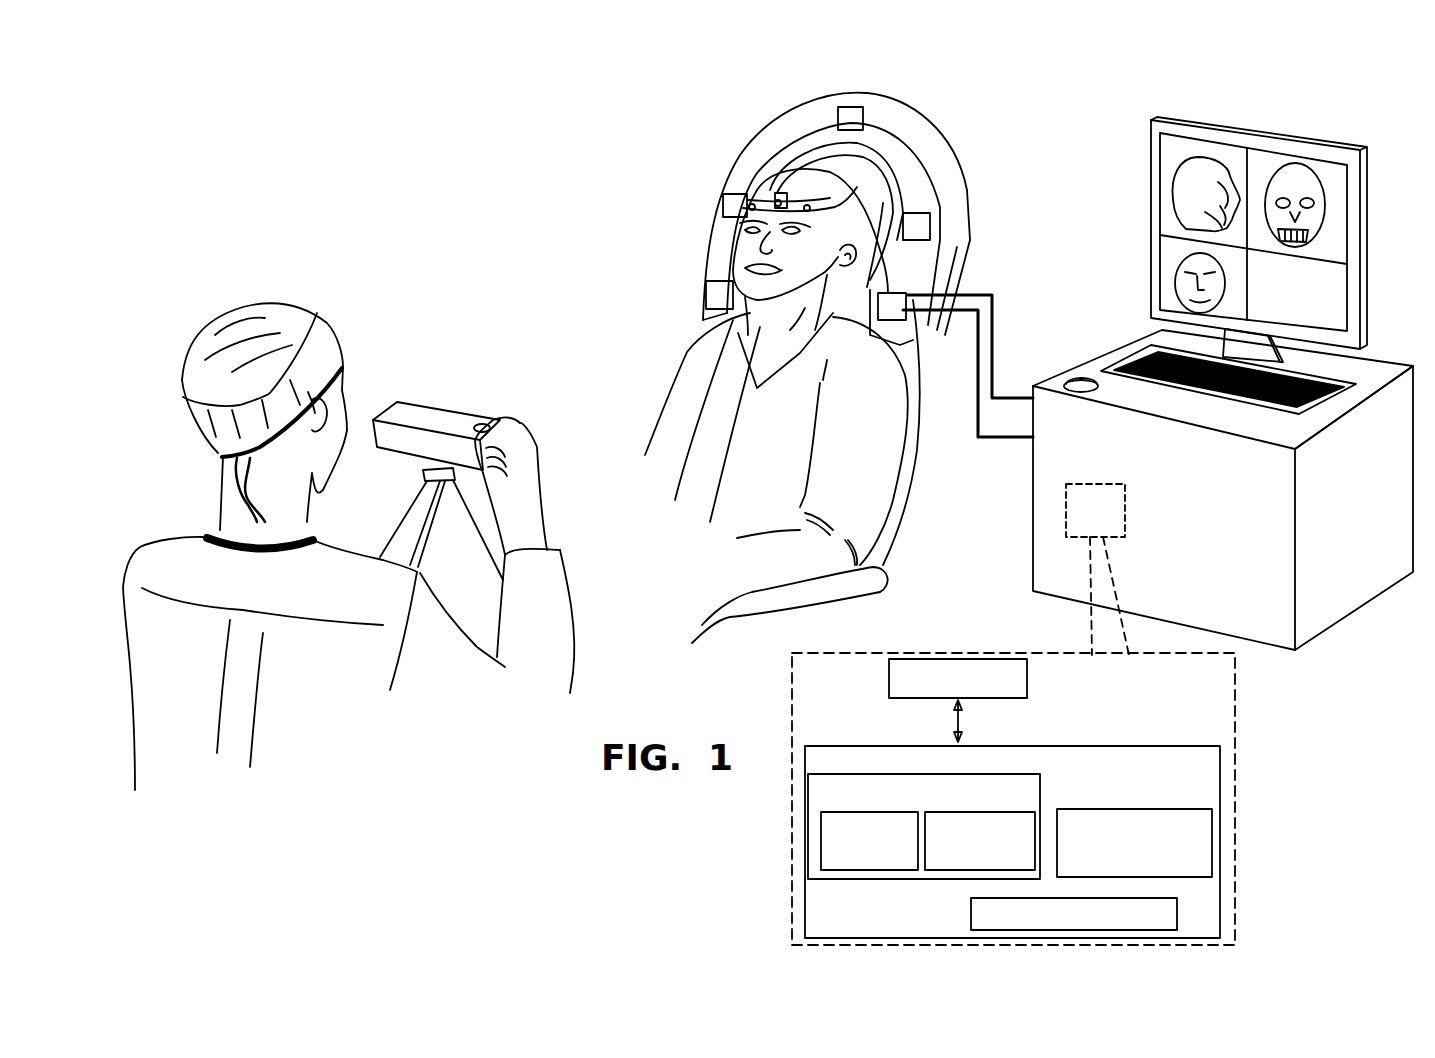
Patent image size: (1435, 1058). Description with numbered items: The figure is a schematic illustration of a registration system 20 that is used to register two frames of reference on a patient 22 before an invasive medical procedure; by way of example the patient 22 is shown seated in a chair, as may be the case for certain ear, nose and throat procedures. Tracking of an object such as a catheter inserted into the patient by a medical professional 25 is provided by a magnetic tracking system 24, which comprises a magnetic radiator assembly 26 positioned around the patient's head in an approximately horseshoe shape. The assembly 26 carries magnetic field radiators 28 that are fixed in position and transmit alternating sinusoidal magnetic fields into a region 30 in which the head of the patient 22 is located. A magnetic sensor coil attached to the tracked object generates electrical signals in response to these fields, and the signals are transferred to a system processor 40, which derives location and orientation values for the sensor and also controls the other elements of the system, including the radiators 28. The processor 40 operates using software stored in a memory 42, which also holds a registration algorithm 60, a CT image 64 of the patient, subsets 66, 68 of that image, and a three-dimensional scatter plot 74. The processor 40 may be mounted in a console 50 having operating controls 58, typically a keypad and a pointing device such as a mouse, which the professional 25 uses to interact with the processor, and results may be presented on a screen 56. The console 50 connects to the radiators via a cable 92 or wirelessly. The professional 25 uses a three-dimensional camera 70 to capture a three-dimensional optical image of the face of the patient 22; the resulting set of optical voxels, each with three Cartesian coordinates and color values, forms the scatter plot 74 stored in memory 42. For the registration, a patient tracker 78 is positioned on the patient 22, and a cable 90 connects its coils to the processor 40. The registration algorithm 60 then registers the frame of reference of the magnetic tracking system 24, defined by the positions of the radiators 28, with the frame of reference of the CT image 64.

The registration system 20 is at (1022, 108).
The patient 22 is at (680, 397).
The magnetic tracking system 24 is at (852, 192).
The medical professional 25 is at (263, 302).
The magnetic radiator assembly 26 is at (940, 167).
The magnetic field radiators 28 is at (860, 120).
The region 30 is at (700, 158).
The system processor 40 is at (1027, 688).
The memory 42 is at (805, 893).
The console 50 is at (1358, 607).
The screen 56 is at (1350, 242).
The operating controls 58 is at (1085, 379).
The registration algorithm 60 is at (1158, 809).
The CT image 64 is at (838, 774).
The subset of image 66 is at (843, 812).
The subset of image 68 is at (1015, 812).
The 3D camera 70 is at (433, 410).
The 3D scatter plot 74 is at (971, 913).
The patient tracker 78 is at (755, 190).
The cable 90 is at (994, 318).
The cable 92 is at (1005, 440).